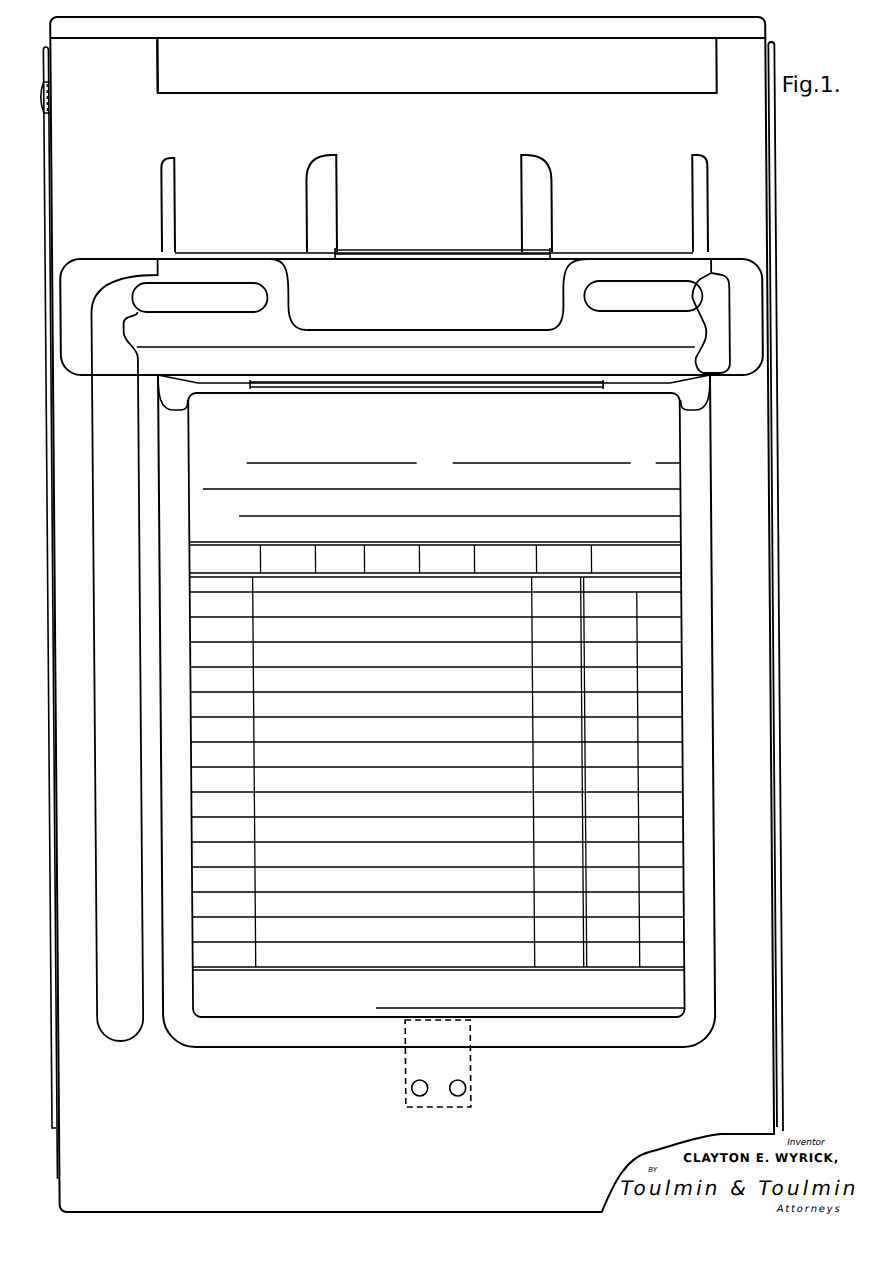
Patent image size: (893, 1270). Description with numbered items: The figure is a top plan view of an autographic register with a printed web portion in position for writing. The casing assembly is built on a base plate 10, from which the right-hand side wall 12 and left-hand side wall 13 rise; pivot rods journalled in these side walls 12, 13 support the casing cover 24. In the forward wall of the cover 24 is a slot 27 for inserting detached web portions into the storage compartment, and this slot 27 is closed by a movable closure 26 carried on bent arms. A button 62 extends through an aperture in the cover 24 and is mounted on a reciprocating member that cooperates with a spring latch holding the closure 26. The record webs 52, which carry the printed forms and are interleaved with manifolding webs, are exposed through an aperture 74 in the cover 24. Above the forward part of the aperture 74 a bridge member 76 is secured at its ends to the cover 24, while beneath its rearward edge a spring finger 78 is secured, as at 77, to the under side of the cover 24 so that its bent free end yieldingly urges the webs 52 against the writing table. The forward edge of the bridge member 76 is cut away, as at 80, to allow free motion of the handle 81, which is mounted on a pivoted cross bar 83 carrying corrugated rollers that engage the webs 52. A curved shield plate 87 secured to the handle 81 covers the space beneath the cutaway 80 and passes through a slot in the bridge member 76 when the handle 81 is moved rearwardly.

The base plate 10 is at (48, 240).
The side wall 12 is at (763, 222).
The side wall 13 is at (53, 222).
The casing cover 24 is at (422, 160).
The movable closure 26 is at (336, 74).
The slot 27 is at (157, 78).
The record webs 52 is at (481, 728).
The button 62 is at (50, 88).
The aperture 74 is at (678, 436).
The bridge member 76 is at (625, 265).
The securing point of spring finger 77 is at (418, 1096).
The spring finger 78 is at (397, 1073).
The cutaway portion 80 is at (295, 318).
The handle 81 is at (464, 238).
The cross bar 83 is at (475, 382).
The curved shield plate 87 is at (437, 304).